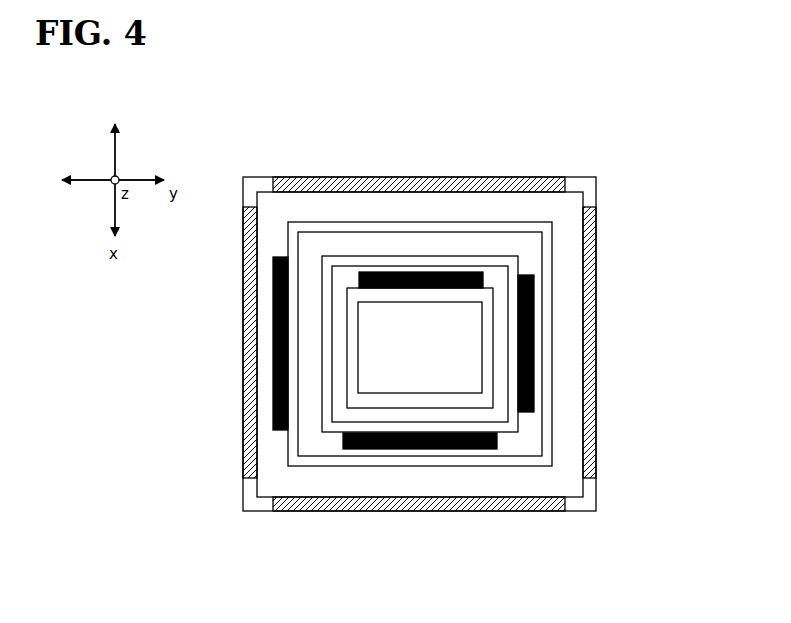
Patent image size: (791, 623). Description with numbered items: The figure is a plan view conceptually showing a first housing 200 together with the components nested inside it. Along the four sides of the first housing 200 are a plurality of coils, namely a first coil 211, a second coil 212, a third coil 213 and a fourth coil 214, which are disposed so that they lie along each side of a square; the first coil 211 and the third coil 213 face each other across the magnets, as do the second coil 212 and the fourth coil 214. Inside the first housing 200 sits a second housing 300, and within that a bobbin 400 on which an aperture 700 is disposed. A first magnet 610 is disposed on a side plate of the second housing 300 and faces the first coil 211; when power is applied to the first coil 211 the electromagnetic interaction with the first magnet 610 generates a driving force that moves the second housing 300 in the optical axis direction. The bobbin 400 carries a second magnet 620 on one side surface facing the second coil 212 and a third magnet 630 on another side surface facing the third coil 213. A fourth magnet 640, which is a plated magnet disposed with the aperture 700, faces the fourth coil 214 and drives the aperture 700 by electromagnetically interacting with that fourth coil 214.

The first housing 200 is at (590, 193).
The first coil 211 is at (249, 383).
The second coil 212 is at (395, 503).
The third coil 213 is at (593, 318).
The fourth coil 214 is at (363, 177).
The second housing 300 is at (530, 462).
The bobbin 400 is at (513, 422).
The first magnet 610 is at (273, 322).
The second magnet 620 is at (452, 448).
The third magnet 630 is at (535, 372).
The fourth magnet 640 is at (432, 273).
The aperture 700 is at (485, 297).